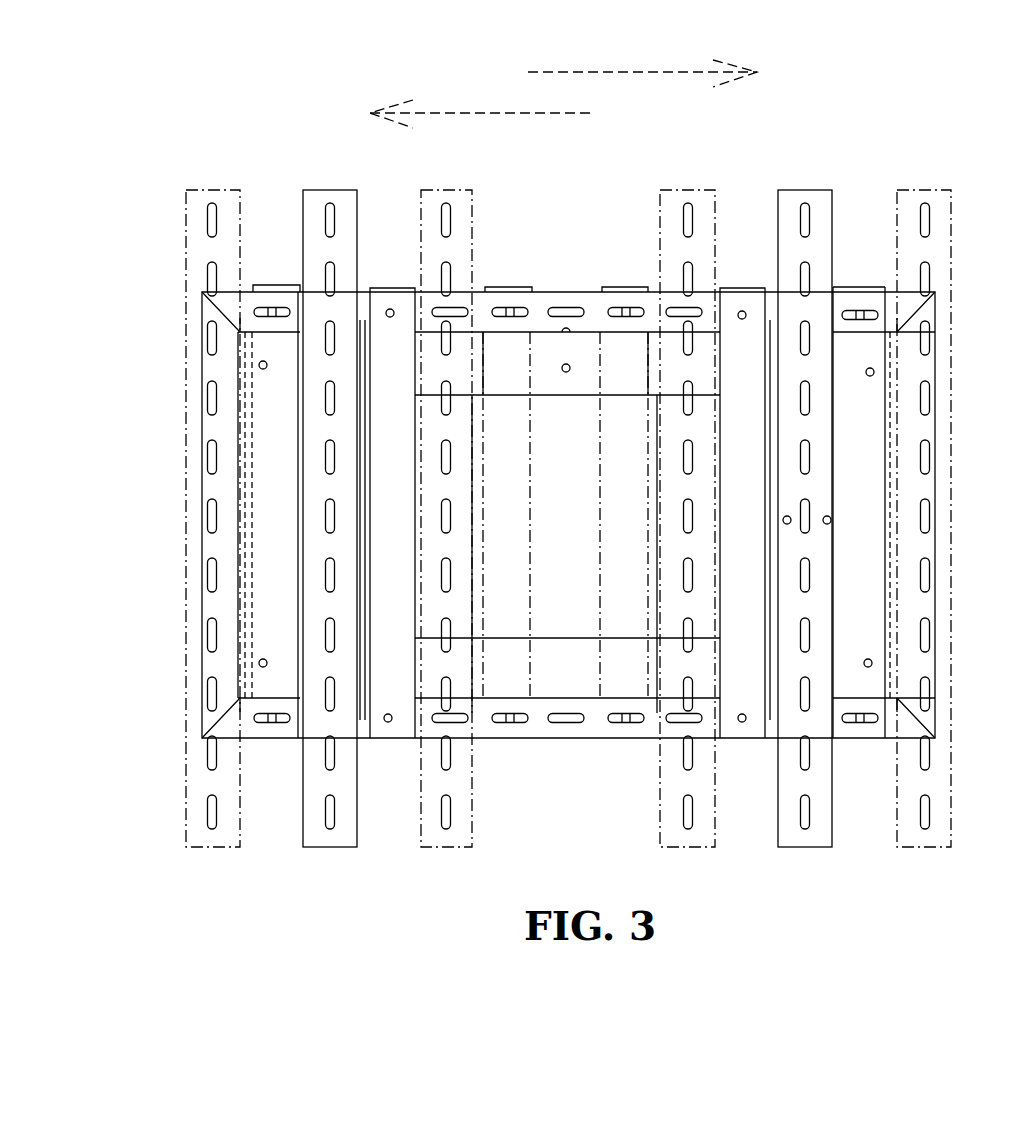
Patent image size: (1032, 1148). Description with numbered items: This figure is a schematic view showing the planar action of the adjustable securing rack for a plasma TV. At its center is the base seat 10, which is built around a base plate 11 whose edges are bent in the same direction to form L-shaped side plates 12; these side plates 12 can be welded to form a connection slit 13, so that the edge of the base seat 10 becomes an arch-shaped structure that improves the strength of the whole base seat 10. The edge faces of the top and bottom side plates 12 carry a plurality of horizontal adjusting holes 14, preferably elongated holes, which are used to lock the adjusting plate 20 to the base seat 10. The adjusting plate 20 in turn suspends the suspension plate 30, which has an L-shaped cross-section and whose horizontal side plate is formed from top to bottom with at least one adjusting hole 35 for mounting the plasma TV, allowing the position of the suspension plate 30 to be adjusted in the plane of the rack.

The base seat 10 is at (537, 285).
The base plate 11 is at (610, 347).
The side plate 12 is at (572, 305).
The connection slit 13 is at (920, 318).
The adjusting hole 14 is at (868, 312).
The adjusting plate 20 is at (380, 297).
The suspension plate 30 is at (313, 487).
The adjusting hole 35 is at (330, 218).